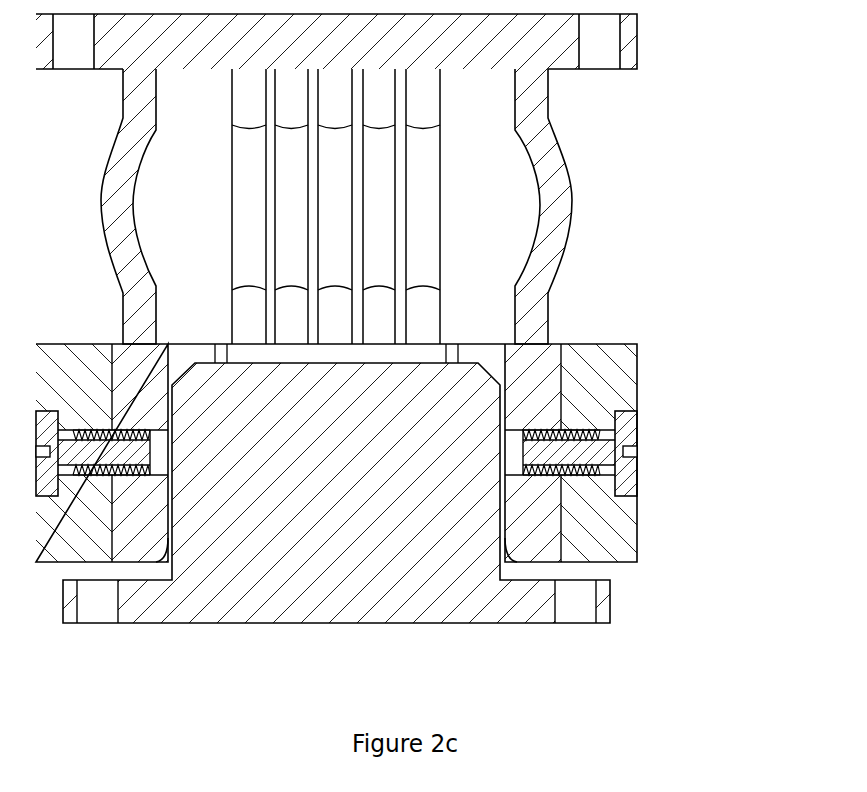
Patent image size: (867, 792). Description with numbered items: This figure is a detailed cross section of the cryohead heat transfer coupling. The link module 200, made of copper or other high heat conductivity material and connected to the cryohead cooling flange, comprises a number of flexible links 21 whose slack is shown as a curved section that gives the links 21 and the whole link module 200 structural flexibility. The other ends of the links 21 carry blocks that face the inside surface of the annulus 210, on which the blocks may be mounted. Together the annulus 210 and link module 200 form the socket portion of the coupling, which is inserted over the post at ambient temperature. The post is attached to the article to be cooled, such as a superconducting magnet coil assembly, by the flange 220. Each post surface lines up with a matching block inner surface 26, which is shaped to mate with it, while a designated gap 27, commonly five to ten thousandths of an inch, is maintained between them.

The link module 200 is at (637, 55).
The flexible link 21 is at (571, 190).
The annulus 210 is at (638, 365).
The flange 220 is at (610, 600).
The block inner surface 26 is at (512, 555).
The gap 27 is at (173, 550).